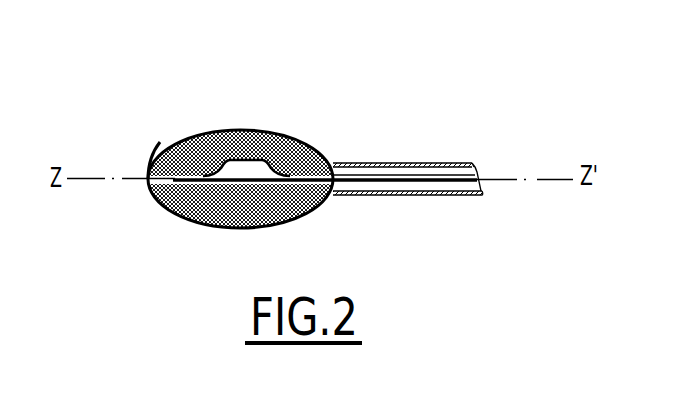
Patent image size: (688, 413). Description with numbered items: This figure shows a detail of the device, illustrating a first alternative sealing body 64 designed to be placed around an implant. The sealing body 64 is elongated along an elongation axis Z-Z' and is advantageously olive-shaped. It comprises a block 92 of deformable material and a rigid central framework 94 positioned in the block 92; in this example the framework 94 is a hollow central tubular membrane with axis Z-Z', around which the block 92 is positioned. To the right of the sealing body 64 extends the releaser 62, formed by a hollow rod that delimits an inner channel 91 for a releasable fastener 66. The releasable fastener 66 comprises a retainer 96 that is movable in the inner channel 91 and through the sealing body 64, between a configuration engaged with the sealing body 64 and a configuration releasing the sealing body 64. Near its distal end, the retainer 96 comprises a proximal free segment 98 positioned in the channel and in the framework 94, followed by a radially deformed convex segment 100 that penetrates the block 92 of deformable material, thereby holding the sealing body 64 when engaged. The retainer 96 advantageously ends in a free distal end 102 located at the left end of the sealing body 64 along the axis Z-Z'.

The releaser 62 is at (427, 195).
The sealing body 64 is at (158, 141).
The releasable fastener 66 is at (240, 105).
The inner channel 91 is at (380, 162).
The block of deformable material 92 is at (262, 131).
The rigid central framework 94 is at (230, 186).
The retainer 96 is at (418, 164).
The proximal free segment 98 is at (303, 174).
The radially deformed convex segment 100 is at (228, 160).
The free distal end 102 is at (182, 184).